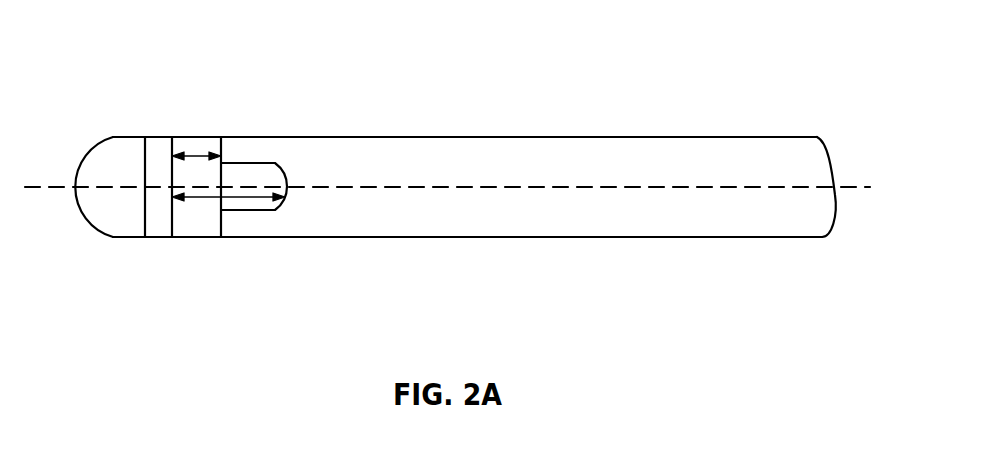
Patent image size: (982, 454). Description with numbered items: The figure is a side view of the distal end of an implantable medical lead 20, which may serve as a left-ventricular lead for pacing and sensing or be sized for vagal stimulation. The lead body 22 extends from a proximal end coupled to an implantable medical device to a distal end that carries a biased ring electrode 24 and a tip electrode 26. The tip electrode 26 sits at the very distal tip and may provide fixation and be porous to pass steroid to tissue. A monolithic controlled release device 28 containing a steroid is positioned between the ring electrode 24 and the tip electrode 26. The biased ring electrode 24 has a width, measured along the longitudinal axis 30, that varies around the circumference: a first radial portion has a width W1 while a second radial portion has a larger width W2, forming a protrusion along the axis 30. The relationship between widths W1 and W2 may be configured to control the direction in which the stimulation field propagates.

The lead 20 is at (432, 60).
The lead body 22 is at (657, 137).
The biased ring electrode 24 is at (187, 137).
The tip electrode 26 is at (100, 140).
The monolithic controlled release device 28 is at (158, 237).
The longitudinal axis 30 is at (755, 192).
The width W1 is at (208, 137).
The width W2 is at (235, 197).